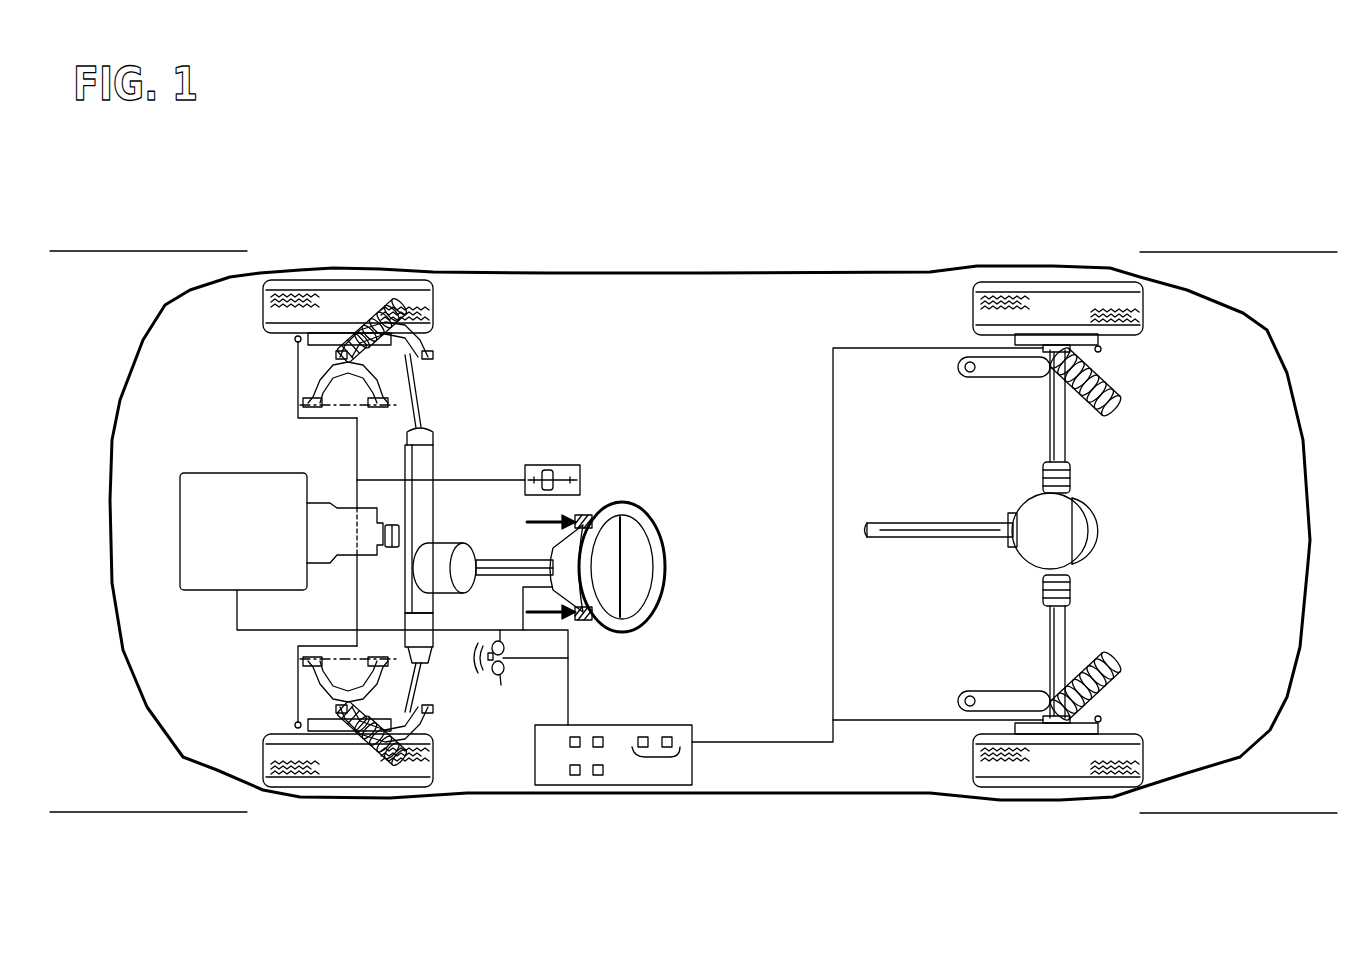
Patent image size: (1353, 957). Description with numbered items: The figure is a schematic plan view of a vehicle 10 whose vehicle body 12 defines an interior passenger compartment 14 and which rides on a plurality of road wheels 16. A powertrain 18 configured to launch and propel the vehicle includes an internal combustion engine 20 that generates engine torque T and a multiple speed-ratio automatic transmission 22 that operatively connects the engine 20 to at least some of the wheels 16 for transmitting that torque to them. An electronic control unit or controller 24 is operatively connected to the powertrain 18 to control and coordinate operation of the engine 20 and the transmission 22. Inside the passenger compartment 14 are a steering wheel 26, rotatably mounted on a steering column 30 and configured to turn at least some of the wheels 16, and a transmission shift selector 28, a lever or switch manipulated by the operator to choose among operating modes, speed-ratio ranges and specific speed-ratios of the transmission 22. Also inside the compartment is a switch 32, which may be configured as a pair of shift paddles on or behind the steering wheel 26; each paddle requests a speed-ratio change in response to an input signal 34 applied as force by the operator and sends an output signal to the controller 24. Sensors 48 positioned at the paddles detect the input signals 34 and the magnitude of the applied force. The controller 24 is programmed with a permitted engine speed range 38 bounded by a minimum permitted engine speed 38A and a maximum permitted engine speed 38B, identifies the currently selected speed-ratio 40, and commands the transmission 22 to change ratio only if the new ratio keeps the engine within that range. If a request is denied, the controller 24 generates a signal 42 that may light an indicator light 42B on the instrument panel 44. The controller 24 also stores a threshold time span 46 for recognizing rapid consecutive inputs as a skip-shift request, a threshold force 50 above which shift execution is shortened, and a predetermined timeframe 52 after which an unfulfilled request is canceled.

The vehicle 10 is at (1060, 183).
The vehicle body 12 is at (710, 271).
The passenger compartment 14 is at (618, 360).
The road wheels 16 is at (312, 266).
The powertrain 18 is at (168, 538).
The internal combustion engine 20 is at (198, 523).
The automatic transmission 22 is at (318, 512).
The controller 24 is at (709, 731).
The steering wheel 26 is at (640, 502).
The transmission shift selector 28 is at (549, 460).
The steering column 30 is at (492, 562).
The switch 32 is at (580, 534).
The input signal 34 is at (537, 607).
The permitted engine speed range 38 is at (655, 757).
The minimum permitted engine speed 38A is at (643, 737).
The maximum permitted engine speed 38B is at (668, 737).
The currently selected speed-ratio 40 is at (598, 737).
The signal 42 is at (520, 660).
The indicator light 42B is at (488, 675).
The instrument panel 44 is at (463, 666).
The threshold time span 46 is at (575, 737).
The sensors 48 is at (592, 512).
The threshold force 50 is at (575, 777).
The predetermined timeframe 52 is at (600, 777).
The engine torque T is at (908, 545).